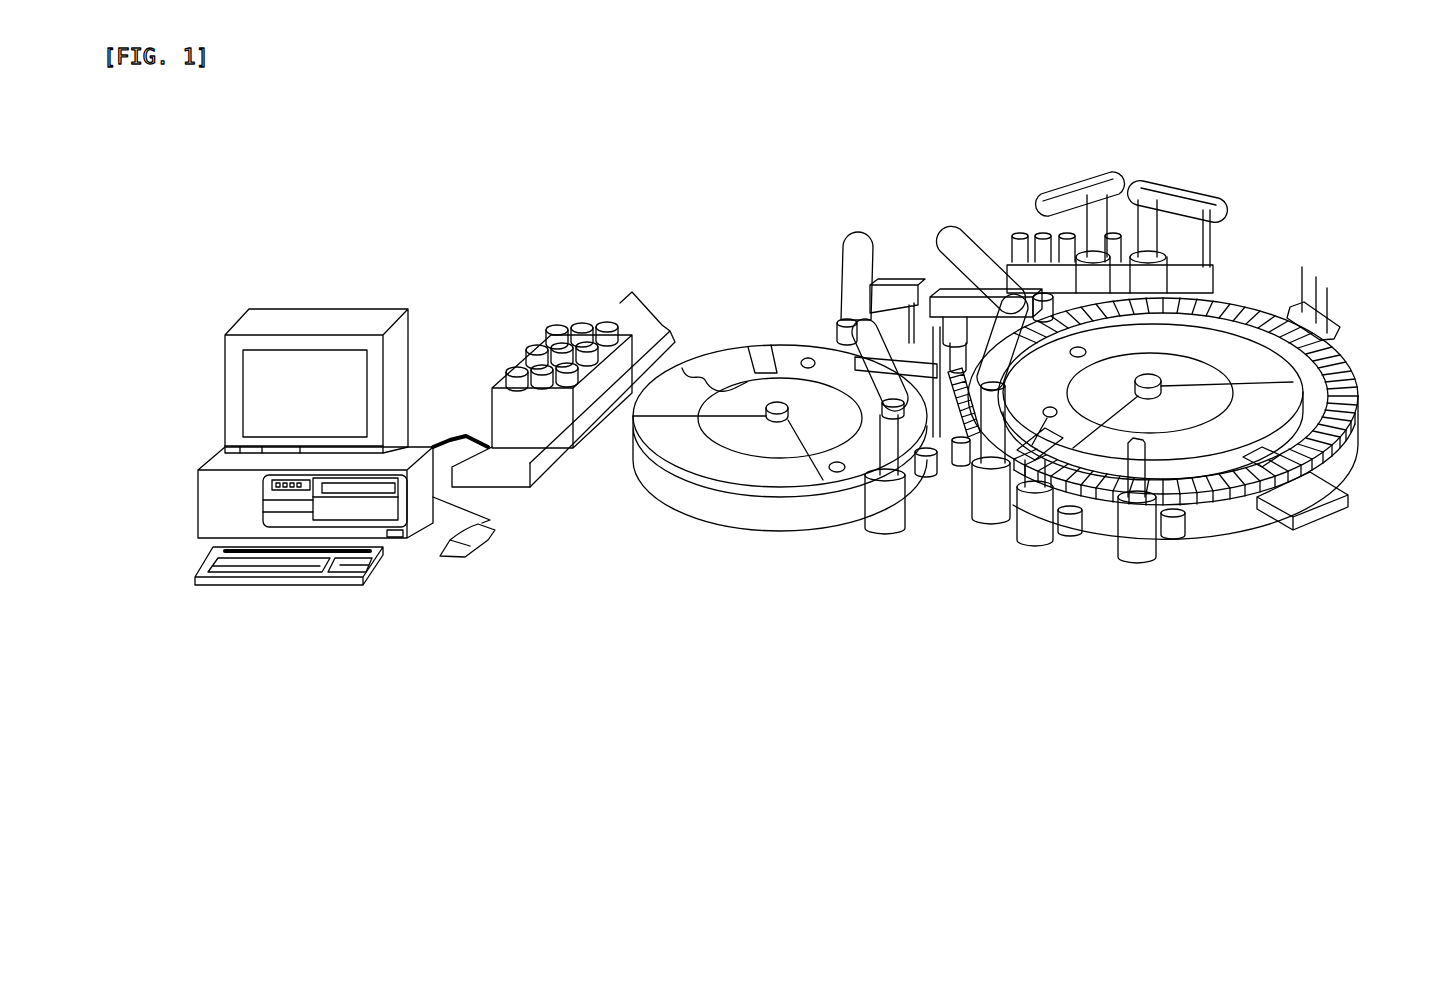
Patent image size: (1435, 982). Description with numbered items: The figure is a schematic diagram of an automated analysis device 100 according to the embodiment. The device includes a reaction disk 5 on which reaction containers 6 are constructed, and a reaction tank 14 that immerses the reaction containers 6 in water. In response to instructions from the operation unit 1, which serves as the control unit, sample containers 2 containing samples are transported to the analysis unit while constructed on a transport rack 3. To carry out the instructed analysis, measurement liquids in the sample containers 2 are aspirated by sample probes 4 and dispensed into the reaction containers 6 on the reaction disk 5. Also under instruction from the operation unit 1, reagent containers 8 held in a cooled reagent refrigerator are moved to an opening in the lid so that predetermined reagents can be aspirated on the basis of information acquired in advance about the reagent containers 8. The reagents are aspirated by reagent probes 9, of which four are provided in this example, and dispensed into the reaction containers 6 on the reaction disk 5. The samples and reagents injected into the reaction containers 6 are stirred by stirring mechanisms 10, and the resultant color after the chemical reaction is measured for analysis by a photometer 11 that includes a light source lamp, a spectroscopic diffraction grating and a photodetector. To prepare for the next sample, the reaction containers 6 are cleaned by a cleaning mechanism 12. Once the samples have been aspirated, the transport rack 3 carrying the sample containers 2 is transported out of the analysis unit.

The automated analysis device 100 is at (971, 170).
The operation unit 1 is at (305, 590).
The sample containers 2 is at (551, 320).
The transport rack 3 is at (547, 427).
The sample probes 4 is at (1077, 195).
The reaction disk 5 is at (1343, 450).
The reaction containers 6 is at (1340, 427).
The reagent containers 8 is at (753, 368).
The reagent probes 9 is at (938, 325).
The stirring mechanisms 10 is at (1123, 545).
The photometer 11 is at (1318, 517).
The cleaning mechanism 12 is at (1340, 323).
The reaction tank 14 is at (1213, 563).